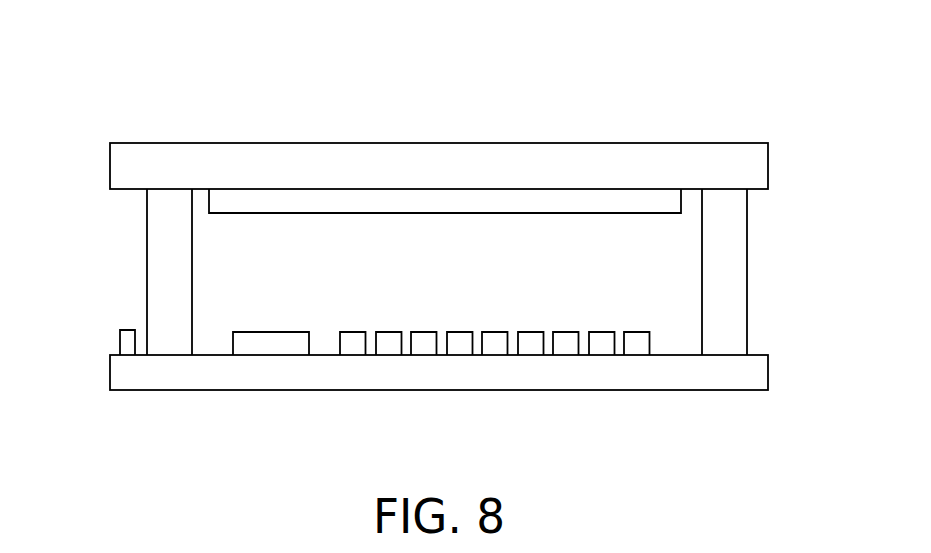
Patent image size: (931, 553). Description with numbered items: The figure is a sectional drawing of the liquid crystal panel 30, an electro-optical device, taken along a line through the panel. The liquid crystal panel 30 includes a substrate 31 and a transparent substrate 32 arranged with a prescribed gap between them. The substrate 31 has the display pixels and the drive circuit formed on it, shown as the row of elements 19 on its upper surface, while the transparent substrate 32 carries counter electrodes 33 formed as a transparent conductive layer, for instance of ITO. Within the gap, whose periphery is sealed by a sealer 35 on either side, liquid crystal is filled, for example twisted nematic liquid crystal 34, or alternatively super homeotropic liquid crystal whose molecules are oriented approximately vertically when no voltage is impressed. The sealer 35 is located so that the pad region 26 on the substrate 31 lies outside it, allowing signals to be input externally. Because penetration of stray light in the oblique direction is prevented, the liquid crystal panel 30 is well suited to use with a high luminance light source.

The liquid crystal panel 30 is at (726, 117).
The substrate 31 is at (752, 372).
The transparent substrate 32 is at (752, 167).
The counter electrodes 33 is at (580, 207).
The twisted nematic (TN) liquid crystal 34 is at (432, 252).
The sealer 35 is at (167, 213).
The pad region 26 is at (128, 349).
The light emitting elements 19 is at (388, 349).